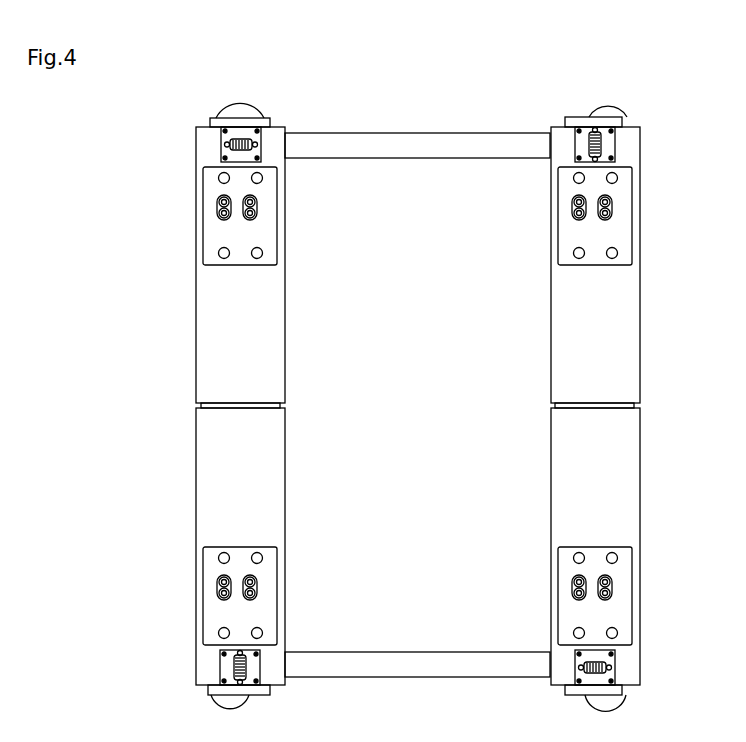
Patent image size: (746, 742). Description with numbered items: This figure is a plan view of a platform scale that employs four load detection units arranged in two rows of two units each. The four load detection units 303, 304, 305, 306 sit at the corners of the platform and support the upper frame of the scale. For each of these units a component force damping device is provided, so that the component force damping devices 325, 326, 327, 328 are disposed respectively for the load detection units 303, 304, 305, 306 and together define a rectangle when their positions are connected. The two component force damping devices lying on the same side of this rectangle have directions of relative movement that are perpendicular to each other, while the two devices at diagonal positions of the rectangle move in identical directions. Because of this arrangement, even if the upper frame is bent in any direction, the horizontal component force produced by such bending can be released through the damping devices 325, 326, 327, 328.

The load detection unit 303 is at (640, 490).
The load detection unit 304 is at (640, 318).
The load detection unit 305 is at (196, 320).
The load detection unit 306 is at (196, 460).
The component force damping device 325 is at (617, 663).
The component force damping device 326 is at (615, 140).
The component force damping device 327 is at (221, 150).
The component force damping device 328 is at (220, 663).